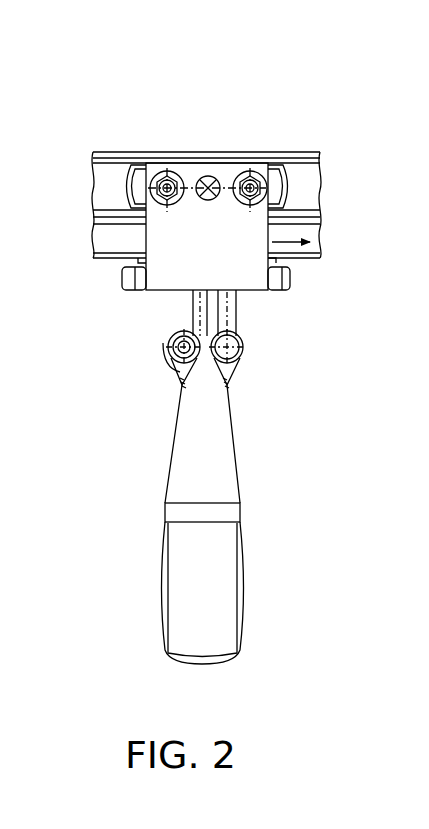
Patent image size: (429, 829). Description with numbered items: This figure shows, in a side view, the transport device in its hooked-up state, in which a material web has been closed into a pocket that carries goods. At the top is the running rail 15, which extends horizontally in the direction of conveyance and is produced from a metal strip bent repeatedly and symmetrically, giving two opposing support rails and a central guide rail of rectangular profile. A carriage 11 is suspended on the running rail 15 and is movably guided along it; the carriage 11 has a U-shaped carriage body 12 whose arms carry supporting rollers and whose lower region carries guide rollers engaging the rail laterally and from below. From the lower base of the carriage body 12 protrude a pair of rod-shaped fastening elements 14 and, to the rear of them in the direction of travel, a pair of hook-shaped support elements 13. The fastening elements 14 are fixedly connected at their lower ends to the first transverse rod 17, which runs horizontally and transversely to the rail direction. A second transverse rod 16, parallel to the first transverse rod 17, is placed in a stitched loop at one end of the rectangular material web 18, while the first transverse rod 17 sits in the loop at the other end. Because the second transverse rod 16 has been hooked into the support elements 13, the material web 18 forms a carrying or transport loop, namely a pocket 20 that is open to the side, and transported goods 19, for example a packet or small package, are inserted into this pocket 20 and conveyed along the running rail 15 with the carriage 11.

The carriage 11 is at (216, 140).
The carriage body 12 is at (228, 264).
The support elements 13 is at (202, 312).
The fastening elements 14 is at (228, 307).
The running rail 15 is at (309, 187).
The second transverse rod 16 is at (172, 363).
The first transverse rod 17 is at (238, 358).
The material web 18 is at (238, 490).
The transported goods 19 is at (208, 578).
The pocket 20 is at (155, 587).